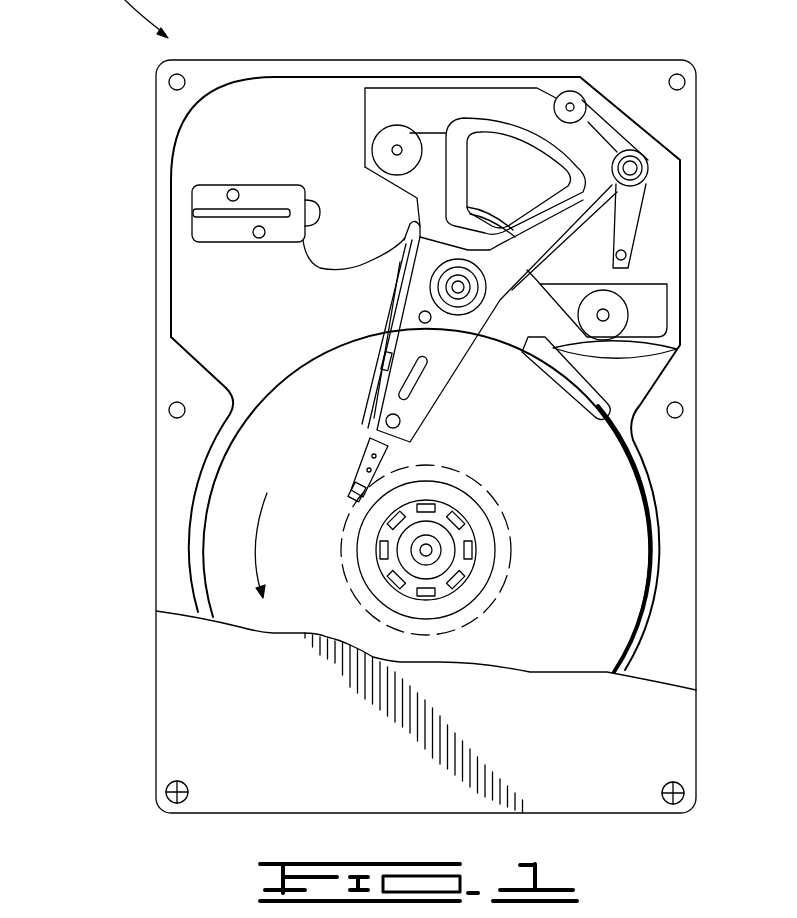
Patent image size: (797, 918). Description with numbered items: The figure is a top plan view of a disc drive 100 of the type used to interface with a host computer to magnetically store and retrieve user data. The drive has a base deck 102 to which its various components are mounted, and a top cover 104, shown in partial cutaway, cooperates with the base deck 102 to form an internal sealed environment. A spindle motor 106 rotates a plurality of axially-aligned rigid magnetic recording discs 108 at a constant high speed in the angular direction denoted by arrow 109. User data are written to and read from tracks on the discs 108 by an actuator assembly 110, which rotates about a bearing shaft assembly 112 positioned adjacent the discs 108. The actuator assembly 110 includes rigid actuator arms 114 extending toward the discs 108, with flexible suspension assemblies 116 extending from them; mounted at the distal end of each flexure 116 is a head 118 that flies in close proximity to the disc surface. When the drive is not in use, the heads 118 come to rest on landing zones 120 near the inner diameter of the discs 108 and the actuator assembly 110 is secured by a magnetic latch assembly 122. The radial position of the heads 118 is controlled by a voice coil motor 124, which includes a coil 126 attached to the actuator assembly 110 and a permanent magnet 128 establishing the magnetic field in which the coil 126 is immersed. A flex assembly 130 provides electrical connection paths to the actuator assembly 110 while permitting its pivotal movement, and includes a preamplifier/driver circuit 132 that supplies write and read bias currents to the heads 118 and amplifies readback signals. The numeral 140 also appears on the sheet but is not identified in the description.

The disc drive 100 is at (666, 912).
The base deck 102 is at (202, 295).
The top cover 104 is at (200, 690).
The spindle motor 106 is at (460, 535).
The magnetic recording discs 108 is at (632, 560).
The arrow 109 is at (258, 535).
The actuator assembly 110 is at (439, 347).
The bearing shaft assembly 112 is at (465, 287).
The actuator arms 114 is at (423, 380).
The flexible suspension assemblies 116 is at (362, 457).
The head 118 is at (352, 485).
The landing zones 120 is at (508, 603).
The magnetic latch assembly 122 is at (633, 212).
The voice coil motor 124 is at (514, 96).
The coil 126 is at (473, 123).
The permanent magnet 128 is at (597, 270).
The flex assembly 130 is at (314, 275).
The preamplifier/driver circuit 132 is at (390, 283).
The printed circuit board 140 is at (768, 911).